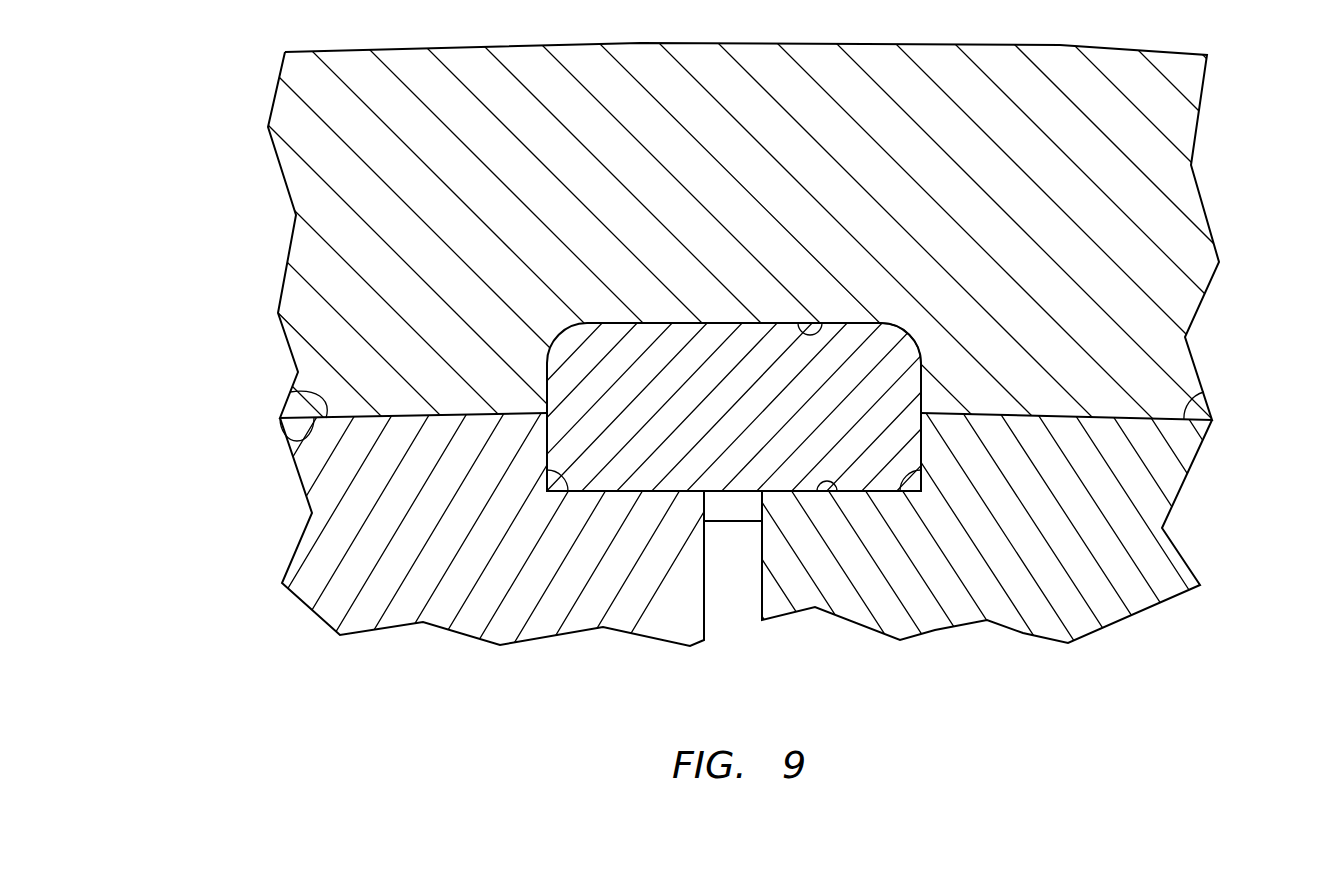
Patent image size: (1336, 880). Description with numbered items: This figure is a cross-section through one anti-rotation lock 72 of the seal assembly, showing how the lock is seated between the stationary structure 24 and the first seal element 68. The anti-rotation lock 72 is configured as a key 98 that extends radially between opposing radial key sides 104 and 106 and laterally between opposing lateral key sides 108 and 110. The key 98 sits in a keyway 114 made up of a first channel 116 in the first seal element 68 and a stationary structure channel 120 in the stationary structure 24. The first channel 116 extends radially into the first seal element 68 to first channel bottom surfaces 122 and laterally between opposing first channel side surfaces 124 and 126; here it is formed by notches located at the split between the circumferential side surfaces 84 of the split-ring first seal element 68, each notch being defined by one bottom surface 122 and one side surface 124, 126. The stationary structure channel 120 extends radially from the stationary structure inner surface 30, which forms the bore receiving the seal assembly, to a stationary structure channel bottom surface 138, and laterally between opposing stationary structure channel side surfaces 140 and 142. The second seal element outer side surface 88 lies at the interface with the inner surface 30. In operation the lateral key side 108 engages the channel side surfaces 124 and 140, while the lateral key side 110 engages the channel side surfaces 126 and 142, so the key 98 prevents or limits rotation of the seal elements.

The stationary structure 24 is at (1204, 98).
The first seal element 68 is at (250, 542).
The stationary structure inner surface 30 is at (282, 442).
The second seal element outer side surface 88 is at (296, 395).
The anti-rotation lock 72 is at (766, 360).
The key 98 is at (760, 320).
The radial key side 106 is at (620, 323).
The stationary structure channel bottom surface 138 is at (816, 330).
The keyway 114 is at (956, 318).
The stationary structure channel 120 is at (924, 328).
The lateral key side 110 is at (547, 378).
The stationary structure channel side surface 142 is at (573, 390).
The lateral key side 108 is at (921, 380).
The stationary structure channel side surface 140 is at (920, 400).
The first channel 116 is at (935, 436).
The first channel bottom surface 122 is at (700, 490).
The first channel side surface 126 is at (553, 497).
The first channel side surface 124 is at (908, 497).
The radial key side 104 is at (617, 493).
The circumferential side surface 84 is at (756, 600).